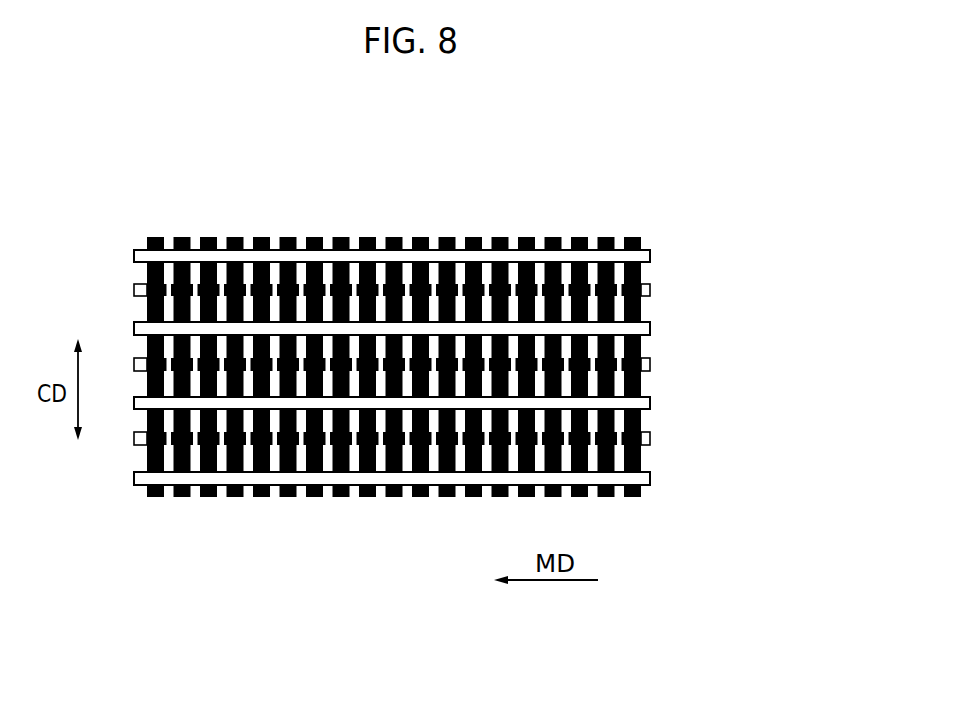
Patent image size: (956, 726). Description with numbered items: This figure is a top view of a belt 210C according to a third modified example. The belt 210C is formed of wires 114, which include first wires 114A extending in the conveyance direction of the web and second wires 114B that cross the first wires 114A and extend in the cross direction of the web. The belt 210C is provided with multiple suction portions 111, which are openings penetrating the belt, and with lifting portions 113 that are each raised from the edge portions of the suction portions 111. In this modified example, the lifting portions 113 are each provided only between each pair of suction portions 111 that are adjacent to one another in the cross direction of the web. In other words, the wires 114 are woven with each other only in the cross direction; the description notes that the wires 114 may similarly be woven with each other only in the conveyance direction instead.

The belt 210C is at (547, 156).
The suction portions 111 is at (247, 273).
The lifting portions 113 is at (315, 256).
The wires 114 is at (442, 557).
The first wires 114A is at (323, 474).
The second wires 114B is at (408, 458).